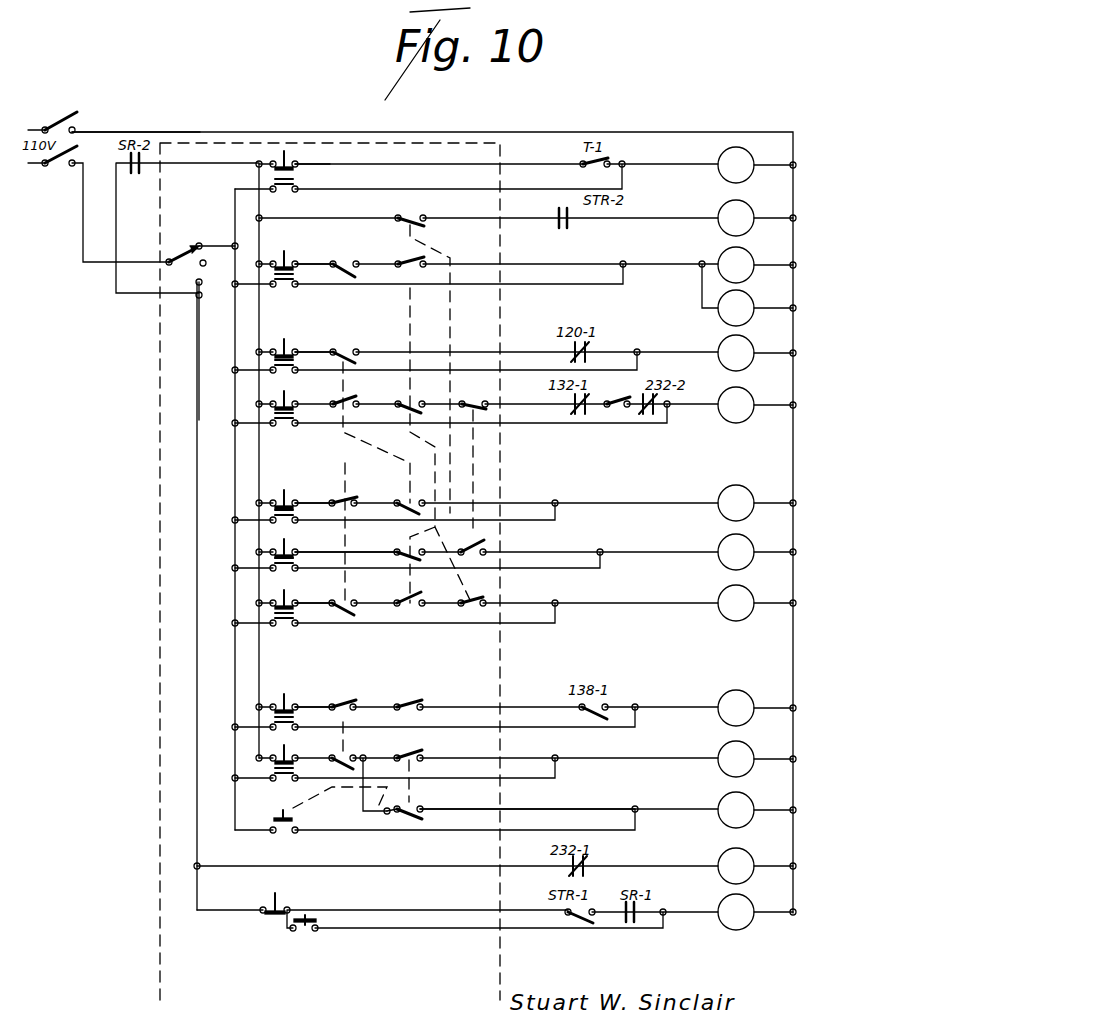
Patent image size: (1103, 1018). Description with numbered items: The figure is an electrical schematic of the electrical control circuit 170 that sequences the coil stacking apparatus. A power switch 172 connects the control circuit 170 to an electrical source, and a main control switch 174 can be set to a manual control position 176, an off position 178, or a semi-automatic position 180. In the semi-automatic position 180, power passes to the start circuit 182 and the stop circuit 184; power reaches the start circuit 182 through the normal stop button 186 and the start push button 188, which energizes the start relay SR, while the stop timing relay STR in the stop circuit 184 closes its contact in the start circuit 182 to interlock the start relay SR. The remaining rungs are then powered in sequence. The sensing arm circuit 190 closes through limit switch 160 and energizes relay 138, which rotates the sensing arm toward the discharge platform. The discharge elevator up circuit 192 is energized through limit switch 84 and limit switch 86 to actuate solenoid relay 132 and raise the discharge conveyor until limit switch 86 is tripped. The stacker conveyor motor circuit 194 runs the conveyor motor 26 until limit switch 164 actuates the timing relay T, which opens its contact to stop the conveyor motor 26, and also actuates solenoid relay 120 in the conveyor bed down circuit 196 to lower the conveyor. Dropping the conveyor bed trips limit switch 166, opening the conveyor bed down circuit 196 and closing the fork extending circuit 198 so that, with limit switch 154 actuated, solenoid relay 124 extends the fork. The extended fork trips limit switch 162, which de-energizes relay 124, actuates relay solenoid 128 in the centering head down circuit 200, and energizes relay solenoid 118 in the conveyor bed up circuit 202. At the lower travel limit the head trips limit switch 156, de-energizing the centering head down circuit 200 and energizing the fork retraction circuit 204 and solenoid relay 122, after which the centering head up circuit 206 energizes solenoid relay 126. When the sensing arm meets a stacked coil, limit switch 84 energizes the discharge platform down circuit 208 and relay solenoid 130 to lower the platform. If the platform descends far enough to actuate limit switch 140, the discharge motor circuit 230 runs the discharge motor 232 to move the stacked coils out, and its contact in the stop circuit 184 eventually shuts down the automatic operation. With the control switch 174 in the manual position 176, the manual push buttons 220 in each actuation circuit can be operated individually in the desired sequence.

The power switch 172 is at (58, 112).
The electrical control circuit 170 is at (112, 128).
The stacker conveyor motor circuit 194 is at (329, 162).
The main control switch 174 is at (176, 252).
The manual control position 176 is at (200, 243).
The off position 178 is at (203, 265).
The semi-automatic position 180 is at (197, 305).
The manual push buttons 220 is at (284, 150).
The sensing arm circuit 190 is at (340, 218).
The limit switch 160 is at (412, 218).
The conveyor bed down circuit 196 is at (310, 260).
The limit switch 164 is at (343, 262).
The limit switch 166 is at (408, 255).
The conveyor bed up circuit 202 is at (311, 350).
The limit switch 162 is at (340, 348).
The limit switch 154 is at (473, 400).
The fork extending circuit 198 is at (316, 402).
The centering head down circuit 200 is at (305, 500).
The limit switch 156 is at (343, 498).
The centering head up circuit 206 is at (336, 550).
The fork retraction circuit 204 is at (310, 600).
The discharge elevator up circuit 192 is at (314, 705).
The limit switch 84 is at (345, 700).
The limit switch 86 is at (405, 700).
The discharge platform down circuit 208 is at (310, 756).
The limit switch 140 is at (405, 751).
The discharge motor circuit 230 is at (558, 809).
The stop circuit 184 is at (222, 863).
The start circuit 182 is at (212, 912).
The stop button 186 is at (270, 918).
The start push button 188 is at (304, 928).
The conveyor motor 26 is at (757, 165).
The relay 138 is at (757, 218).
The solenoid relay 120 is at (757, 265).
The timing relay T is at (757, 308).
The relay solenoid 118 is at (757, 353).
The solenoid relay 124 is at (757, 405).
The relay solenoid 128 is at (757, 503).
The solenoid relay 126 is at (757, 552).
The solenoid relay 122 is at (757, 603).
The solenoid relay 132 is at (757, 708).
The relay solenoid 130 is at (757, 759).
The discharge motor 232 is at (757, 810).
The stop timing relay STR is at (757, 866).
The start relay SR is at (757, 912).